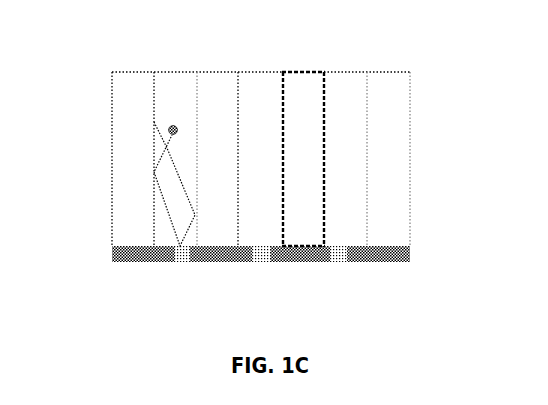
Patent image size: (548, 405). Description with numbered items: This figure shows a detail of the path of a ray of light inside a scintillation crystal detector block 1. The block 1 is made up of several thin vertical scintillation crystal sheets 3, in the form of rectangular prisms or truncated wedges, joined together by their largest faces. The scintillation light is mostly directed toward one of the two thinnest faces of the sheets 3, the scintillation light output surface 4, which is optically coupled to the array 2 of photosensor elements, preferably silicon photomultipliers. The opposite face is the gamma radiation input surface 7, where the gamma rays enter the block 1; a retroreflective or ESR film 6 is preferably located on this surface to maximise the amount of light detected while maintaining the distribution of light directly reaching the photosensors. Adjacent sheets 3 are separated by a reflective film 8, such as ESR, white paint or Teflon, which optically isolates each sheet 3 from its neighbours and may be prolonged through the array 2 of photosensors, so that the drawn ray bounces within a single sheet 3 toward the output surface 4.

The scintillation crystal detector block 1 is at (96, 98).
The array of photosensor elements 2 is at (112, 256).
The scintillation crystal sheets 3 is at (397, 214).
The scintillation light output surface 4 is at (341, 248).
The retroreflective film 6 is at (349, 71).
The gamma radiation input surface 7 is at (216, 71).
The reflective film 8 is at (369, 118).